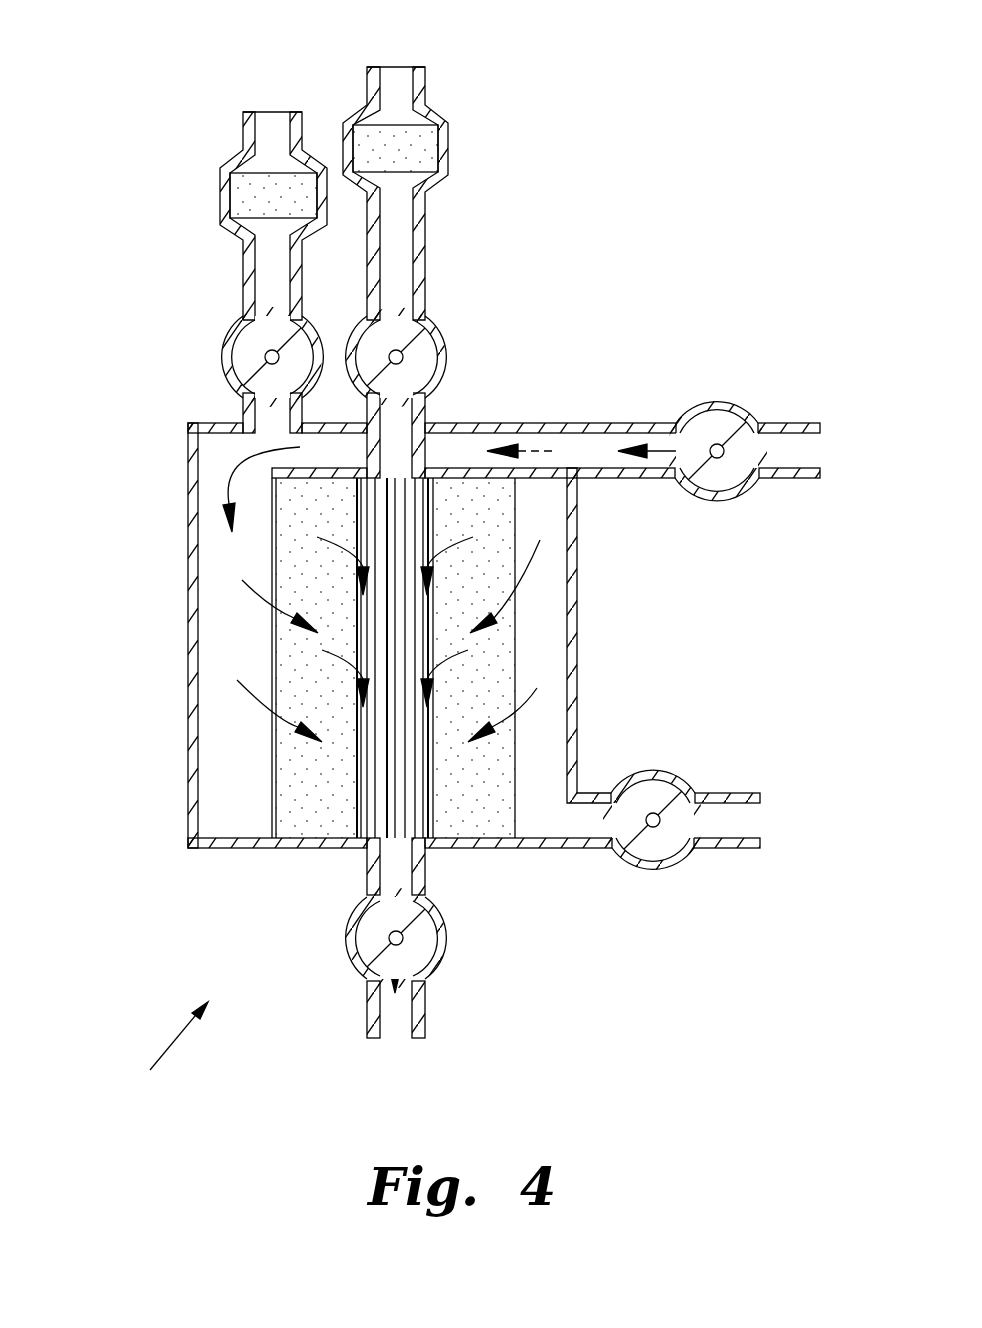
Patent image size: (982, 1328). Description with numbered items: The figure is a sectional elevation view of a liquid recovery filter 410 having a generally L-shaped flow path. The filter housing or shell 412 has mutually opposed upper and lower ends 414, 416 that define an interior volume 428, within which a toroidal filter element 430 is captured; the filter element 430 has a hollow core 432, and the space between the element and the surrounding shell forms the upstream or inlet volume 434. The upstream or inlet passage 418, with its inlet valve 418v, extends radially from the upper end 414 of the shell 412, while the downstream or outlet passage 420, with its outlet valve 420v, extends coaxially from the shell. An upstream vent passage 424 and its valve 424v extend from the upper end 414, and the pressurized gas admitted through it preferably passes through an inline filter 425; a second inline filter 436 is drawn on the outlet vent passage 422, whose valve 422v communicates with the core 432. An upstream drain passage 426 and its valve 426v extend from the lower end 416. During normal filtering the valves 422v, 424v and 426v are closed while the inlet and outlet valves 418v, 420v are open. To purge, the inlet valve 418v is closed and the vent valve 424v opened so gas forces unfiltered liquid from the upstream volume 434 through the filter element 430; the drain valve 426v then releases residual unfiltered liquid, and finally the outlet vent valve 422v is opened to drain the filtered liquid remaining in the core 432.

The liquid recovery filter 410 is at (156, 1058).
The filter housing 412 is at (187, 693).
The first end 414 is at (215, 422).
The second end 416 is at (262, 850).
The inlet passage 418 is at (610, 423).
The inlet valve 418v is at (717, 400).
The outlet passage 420 is at (425, 870).
The outlet valve 420v is at (435, 967).
The outlet vent passage 422 is at (427, 413).
The outlet vent passage valve 422v is at (433, 322).
The upstream vent passage 424 is at (243, 302).
The upstream vent passage valve 424v is at (222, 352).
The inline filter 425 is at (222, 195).
The upstream drain passage 426 is at (605, 793).
The upstream drain passage valve 426v is at (683, 783).
The interior volume 428 is at (227, 605).
The filter element 430 is at (270, 757).
The hollow core 432 is at (395, 633).
The upstream volume 434 is at (543, 635).
The inline filter 436 is at (343, 138).